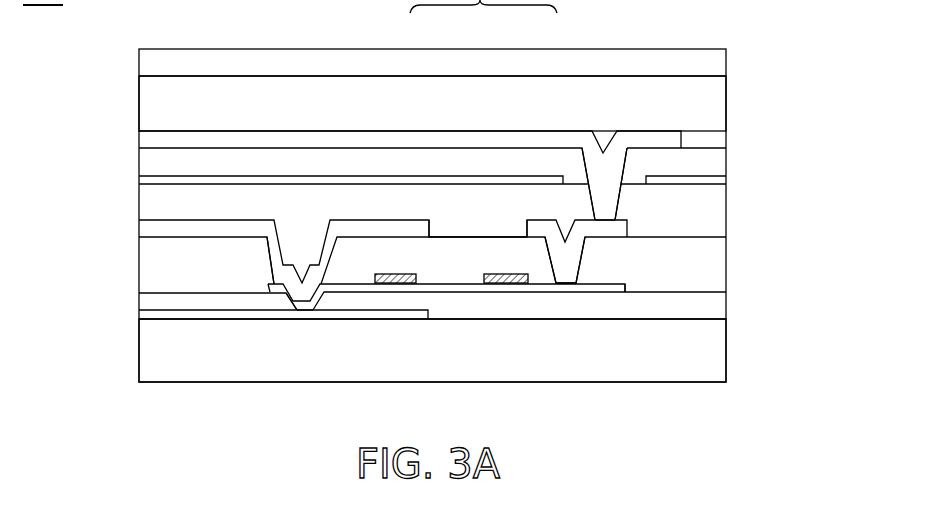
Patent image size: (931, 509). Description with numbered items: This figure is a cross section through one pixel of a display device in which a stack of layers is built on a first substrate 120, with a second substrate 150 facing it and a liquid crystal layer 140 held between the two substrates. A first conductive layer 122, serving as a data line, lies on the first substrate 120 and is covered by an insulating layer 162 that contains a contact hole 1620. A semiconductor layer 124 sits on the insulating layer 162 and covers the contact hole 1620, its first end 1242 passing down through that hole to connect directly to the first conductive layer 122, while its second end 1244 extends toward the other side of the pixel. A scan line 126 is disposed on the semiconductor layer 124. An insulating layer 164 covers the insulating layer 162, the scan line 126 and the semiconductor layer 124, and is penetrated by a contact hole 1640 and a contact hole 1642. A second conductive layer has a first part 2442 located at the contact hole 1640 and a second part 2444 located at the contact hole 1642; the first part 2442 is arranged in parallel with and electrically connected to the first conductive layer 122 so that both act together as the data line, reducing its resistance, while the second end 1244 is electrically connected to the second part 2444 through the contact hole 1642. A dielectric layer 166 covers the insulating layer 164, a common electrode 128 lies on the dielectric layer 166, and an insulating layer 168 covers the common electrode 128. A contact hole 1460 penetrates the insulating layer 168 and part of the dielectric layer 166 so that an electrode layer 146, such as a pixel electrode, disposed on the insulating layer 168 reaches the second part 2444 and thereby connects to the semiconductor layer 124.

The second substrate 150 is at (147, 67).
The liquid crystal layer 140 is at (142, 108).
The electrode layer 146 is at (142, 137).
The insulating layer 168 is at (142, 162).
The common electrode 128 is at (146, 180).
The dielectric layer 166 is at (154, 214).
The insulating layer 164 is at (145, 274).
The insulating layer 162 is at (145, 296).
The first conductive layer 122 is at (145, 319).
The first substrate 120 is at (148, 351).
The scan line 126 is at (418, 283).
The semiconductor layer 124 is at (616, 283).
The first end 1242 is at (302, 305).
The second end 1244 is at (629, 289).
The contact hole 1640 is at (261, 266).
The contact hole 1620 is at (269, 305).
The contact hole 1642 is at (594, 254).
The contact hole 1460 is at (637, 177).
The first part of the second conductive layer 2442 is at (410, 228).
The second part of the second conductive layer 2444 is at (588, 225).